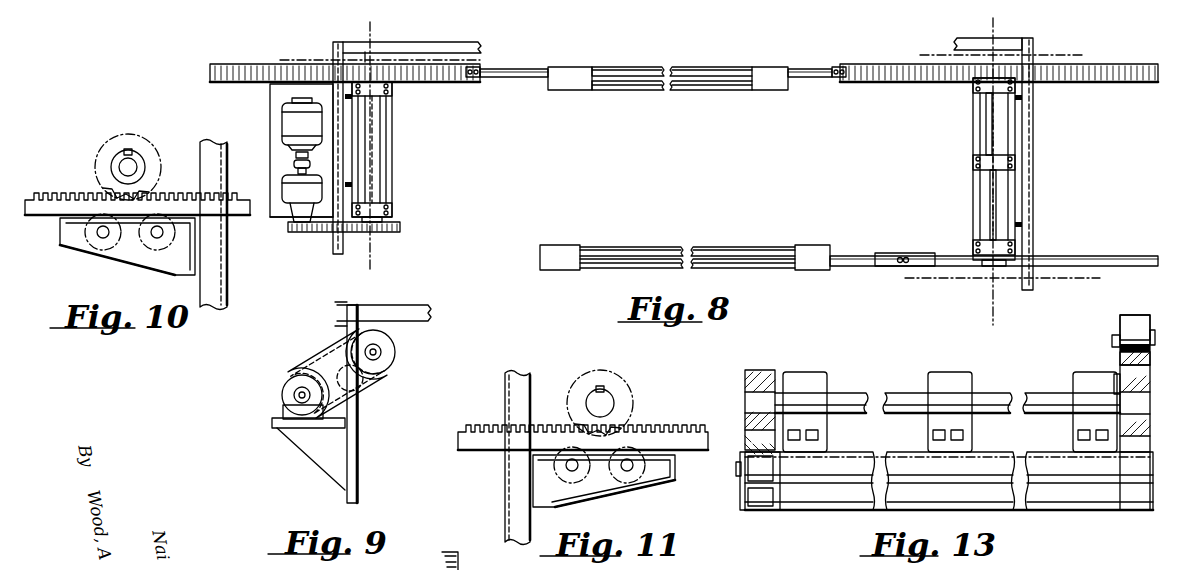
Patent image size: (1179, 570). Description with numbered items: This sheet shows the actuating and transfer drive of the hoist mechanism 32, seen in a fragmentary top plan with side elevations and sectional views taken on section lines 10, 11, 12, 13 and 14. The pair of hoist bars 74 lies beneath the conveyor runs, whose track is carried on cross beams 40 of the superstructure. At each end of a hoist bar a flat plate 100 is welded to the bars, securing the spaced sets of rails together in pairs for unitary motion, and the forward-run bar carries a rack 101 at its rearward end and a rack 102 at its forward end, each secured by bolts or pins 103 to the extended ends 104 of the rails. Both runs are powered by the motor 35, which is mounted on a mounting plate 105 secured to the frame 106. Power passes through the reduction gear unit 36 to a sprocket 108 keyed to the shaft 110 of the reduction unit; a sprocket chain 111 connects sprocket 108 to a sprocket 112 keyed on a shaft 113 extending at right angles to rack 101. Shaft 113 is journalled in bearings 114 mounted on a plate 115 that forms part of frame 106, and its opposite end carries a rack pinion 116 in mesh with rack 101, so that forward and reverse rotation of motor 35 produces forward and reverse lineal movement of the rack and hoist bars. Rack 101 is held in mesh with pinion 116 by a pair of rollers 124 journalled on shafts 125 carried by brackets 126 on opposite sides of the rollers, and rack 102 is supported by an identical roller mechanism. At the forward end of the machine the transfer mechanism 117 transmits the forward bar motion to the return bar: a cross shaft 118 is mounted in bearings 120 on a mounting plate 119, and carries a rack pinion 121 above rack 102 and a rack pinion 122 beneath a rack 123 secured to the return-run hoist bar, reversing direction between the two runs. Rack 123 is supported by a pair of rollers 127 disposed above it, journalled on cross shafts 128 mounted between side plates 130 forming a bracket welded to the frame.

In FIG. 8, the hoist mechanism 32 is at (206, 73).
In FIG. 8, the rack 101 is at (273, 67).
In FIG. 10, the rack 101 is at (54, 179).
In FIG. 8, the cross beams 40 is at (333, 58).
In FIG. 8, the rack pinion 116 is at (366, 66).
In FIG. 10, the rack pinion 116 is at (100, 178).
In FIG. 8, the section line 12— 12 is at (362, 32).
In FIG. 8, the section line 10— 10 is at (289, 45).
In FIG. 8, the motor 35 is at (283, 136).
In FIG. 8, the reduction gear unit 36 is at (284, 186).
In FIG. 8, the mounting plate 105 is at (283, 216).
In FIG. 10, the mounting plate 105 is at (228, 236).
In FIG. 9, the mounting plate 105 is at (280, 418).
In FIG. 8, the sprocket chain 111 is at (327, 234).
In FIG. 9, the sprocket chain 111 is at (338, 344).
In FIG. 8, the shaft 113 is at (376, 163).
In FIG. 10, the shaft 113 is at (145, 152).
In FIG. 9, the shaft 113 is at (384, 353).
In FIG. 8, the plate 115 is at (393, 178).
In FIG. 8, the bearings 114 is at (373, 97).
In FIG. 8, the bolts or pins 103 is at (464, 79).
In FIG. 8, the extended ends 104 is at (538, 67).
In FIG. 8, the flat plate 100 is at (558, 85).
In FIG. 8, the hoist bars 74 is at (645, 66).
In FIG. 8, the rack 102 is at (912, 64).
In FIG. 11, the rack 102 is at (667, 428).
In FIG. 8, the transfer mechanism 117 is at (964, 137).
In FIG. 8, the mounting plate 119 is at (975, 190).
In FIG. 13, the mounting plate 119 is at (1043, 452).
In FIG. 8, the cross shaft 118 is at (988, 209).
In FIG. 13, the cross shaft 118 is at (841, 393).
In FIG. 8, the bearings 120 is at (982, 247).
In FIG. 13, the bearings 120 is at (800, 372).
In FIG. 8, the rack 123 is at (924, 253).
In FIG. 13, the rack 123 is at (1120, 358).
In FIG. 8, the section line 11— 11 is at (942, 44).
In FIG. 8, the section line 13— 13 is at (968, 28).
In FIG. 8, the section line 14— 14 is at (930, 246).
In FIG. 10, the frame 106 is at (228, 272).
In FIG. 9, the frame 106 is at (358, 439).
In FIG. 11, the frame 106 is at (517, 458).
In FIG. 10, the rollers 124 is at (78, 250).
In FIG. 11, the rollers 124 is at (604, 481).
In FIG. 10, the shafts 125 is at (106, 240).
In FIG. 11, the shafts 125 is at (599, 465).
In FIG. 10, the brackets 126 is at (165, 262).
In FIG. 9, the sprocket 108 is at (320, 384).
In FIG. 9, the shaft 110 is at (301, 392).
In FIG. 9, the sprocket 112 is at (363, 376).
In FIG. 11, the rack pinion 121 is at (627, 424).
In FIG. 13, the rack pinion 121 is at (757, 370).
In FIG. 13, the rollers 127 is at (1136, 315).
In FIG. 13, the cross shafts 128 is at (1120, 330).
In FIG. 13, the side plates 130 is at (1120, 346).
In FIG. 13, the rack pinion 122 is at (1120, 376).